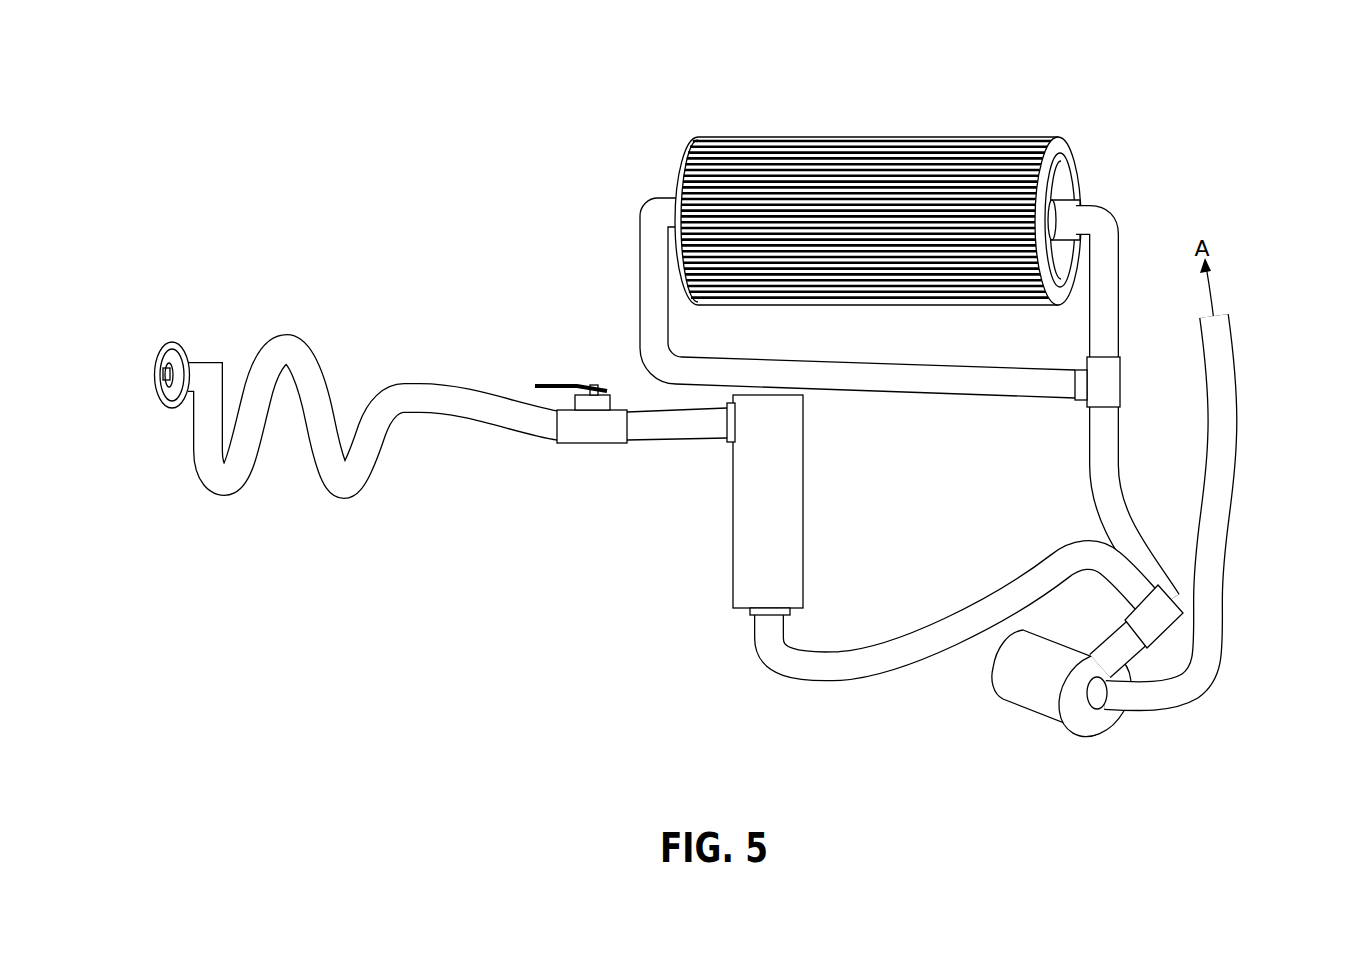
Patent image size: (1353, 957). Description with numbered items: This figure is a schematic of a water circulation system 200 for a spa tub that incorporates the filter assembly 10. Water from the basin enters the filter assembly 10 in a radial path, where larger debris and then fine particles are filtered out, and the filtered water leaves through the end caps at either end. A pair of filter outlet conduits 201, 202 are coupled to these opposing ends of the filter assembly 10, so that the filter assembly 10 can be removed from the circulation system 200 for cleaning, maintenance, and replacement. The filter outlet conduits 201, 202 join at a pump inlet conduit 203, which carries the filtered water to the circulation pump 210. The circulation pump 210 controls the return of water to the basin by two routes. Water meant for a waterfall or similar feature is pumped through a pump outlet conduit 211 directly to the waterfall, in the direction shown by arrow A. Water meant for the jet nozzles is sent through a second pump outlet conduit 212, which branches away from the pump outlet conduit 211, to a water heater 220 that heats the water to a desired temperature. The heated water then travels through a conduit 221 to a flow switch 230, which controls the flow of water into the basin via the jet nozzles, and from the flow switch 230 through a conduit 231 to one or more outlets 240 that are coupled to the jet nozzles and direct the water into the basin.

The filter assembly 10 is at (752, 123).
The water circulation system 200 is at (427, 198).
The filter outlet conduit 201 is at (1123, 228).
The filter outlet conduit 202 is at (640, 299).
The pump inlet conduit 203 is at (1103, 485).
The circulation pump 210 is at (1015, 685).
The pump outlet conduit 211 is at (1227, 538).
The pump outlet conduit 212 is at (935, 657).
The water heater 220 is at (733, 542).
The conduit 221 is at (670, 442).
The flow switch 230 is at (592, 432).
The conduit 231 is at (358, 498).
The outlet 240 is at (172, 410).